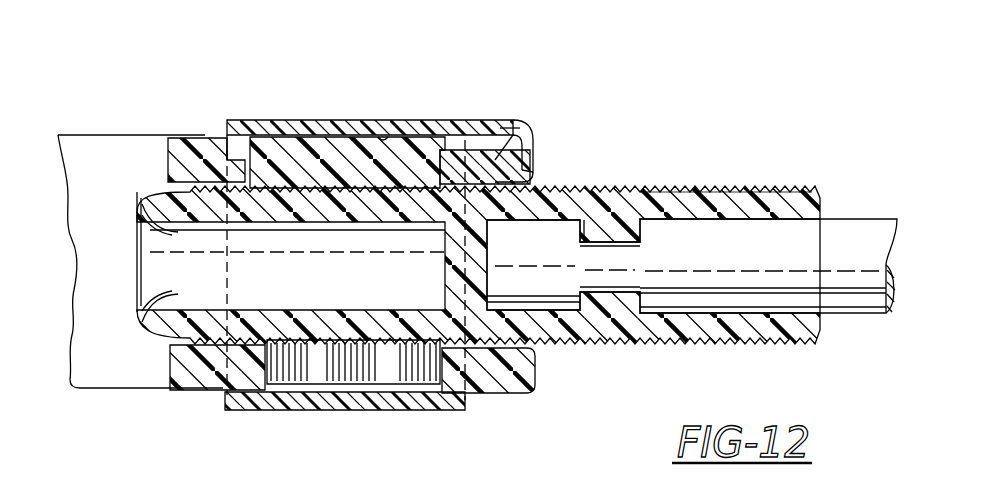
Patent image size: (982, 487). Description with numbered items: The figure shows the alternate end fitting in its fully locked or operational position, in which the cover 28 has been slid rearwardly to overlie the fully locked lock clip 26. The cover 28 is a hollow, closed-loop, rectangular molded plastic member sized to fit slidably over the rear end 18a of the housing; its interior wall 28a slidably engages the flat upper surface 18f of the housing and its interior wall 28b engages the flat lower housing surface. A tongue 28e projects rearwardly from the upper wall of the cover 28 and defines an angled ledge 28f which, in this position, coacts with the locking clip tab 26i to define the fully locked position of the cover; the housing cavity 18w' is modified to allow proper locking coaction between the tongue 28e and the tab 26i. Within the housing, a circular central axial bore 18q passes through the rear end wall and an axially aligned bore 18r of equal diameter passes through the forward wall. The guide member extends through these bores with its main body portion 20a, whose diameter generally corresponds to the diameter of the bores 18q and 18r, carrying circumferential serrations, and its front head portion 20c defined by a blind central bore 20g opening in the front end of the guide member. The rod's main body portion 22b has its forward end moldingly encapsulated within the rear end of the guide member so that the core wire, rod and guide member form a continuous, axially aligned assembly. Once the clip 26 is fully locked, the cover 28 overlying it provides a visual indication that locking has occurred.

The rear end 18a is at (213, 135).
The flat upper surface 18f is at (185, 138).
The circular central axial bore 18q is at (513, 396).
The circular central axial bore 18r is at (250, 350).
The housing cavity 18w' is at (569, 109).
The main body portion 20a is at (725, 189).
The front head portion 20c is at (139, 356).
The blind central bore 20g is at (137, 232).
The main body portion 22b is at (836, 238).
The lock clip 26 is at (306, 165).
The locking clip tab 26i is at (470, 150).
The cover 28 is at (265, 122).
The interior wall 28a is at (382, 137).
The interior wall 28b is at (318, 397).
The tongue 28e is at (500, 120).
The angled ledge 28f is at (538, 170).